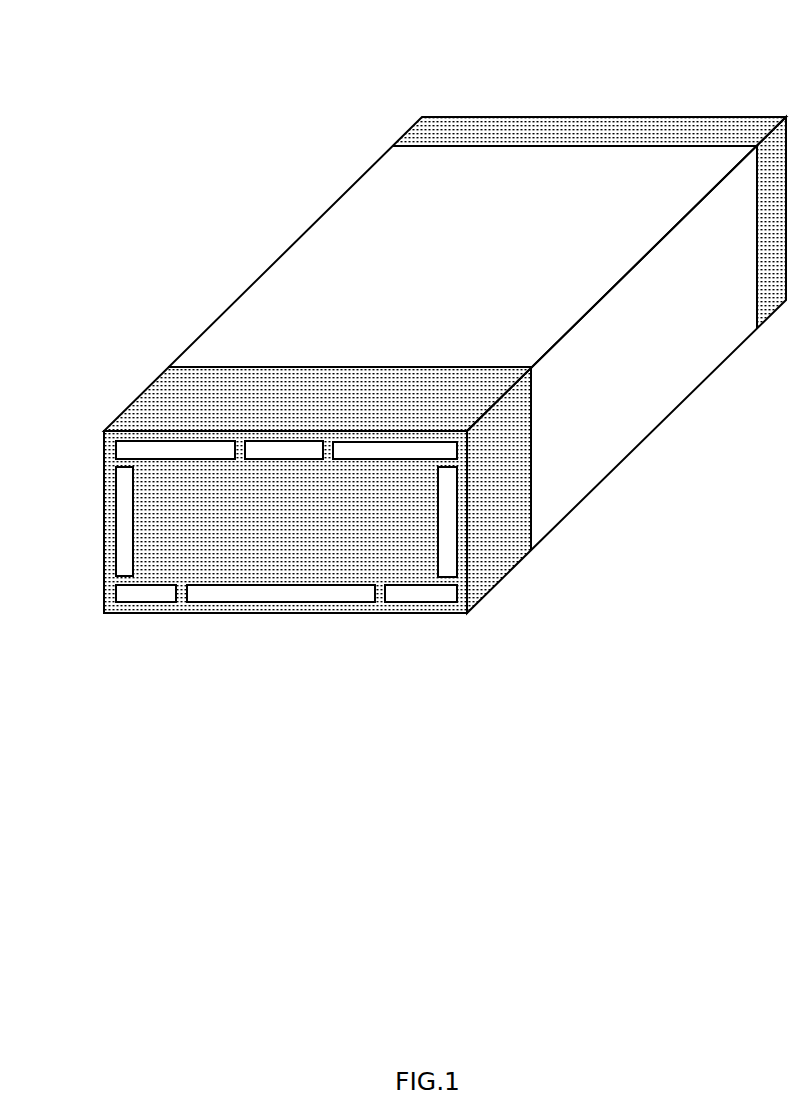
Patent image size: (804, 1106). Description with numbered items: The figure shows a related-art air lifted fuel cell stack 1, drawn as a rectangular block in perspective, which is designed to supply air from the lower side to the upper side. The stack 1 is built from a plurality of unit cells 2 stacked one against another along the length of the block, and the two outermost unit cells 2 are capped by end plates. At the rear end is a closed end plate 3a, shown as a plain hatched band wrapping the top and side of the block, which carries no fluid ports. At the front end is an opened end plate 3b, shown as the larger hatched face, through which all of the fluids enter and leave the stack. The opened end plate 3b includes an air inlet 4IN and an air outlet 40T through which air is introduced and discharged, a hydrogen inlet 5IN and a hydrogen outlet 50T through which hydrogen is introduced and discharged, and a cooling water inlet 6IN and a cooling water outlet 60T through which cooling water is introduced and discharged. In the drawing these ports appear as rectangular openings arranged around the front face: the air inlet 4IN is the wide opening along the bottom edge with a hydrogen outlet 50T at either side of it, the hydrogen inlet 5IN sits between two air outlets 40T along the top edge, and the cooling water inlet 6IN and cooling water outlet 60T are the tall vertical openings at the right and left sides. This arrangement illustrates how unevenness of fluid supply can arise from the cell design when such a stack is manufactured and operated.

The fuel cell stack 1 is at (409, 334).
The unit cells 2 is at (316, 250).
The closed end plate 3a is at (722, 131).
The opened end plate 3b is at (210, 388).
The air outlet 40T is at (128, 449).
The hydrogen outlet 50T is at (145, 596).
The cooling water outlet 60T is at (128, 523).
The air inlet 4IN is at (282, 596).
The hydrogen inlet 5IN is at (272, 446).
The cooling water inlet 6IN is at (447, 517).